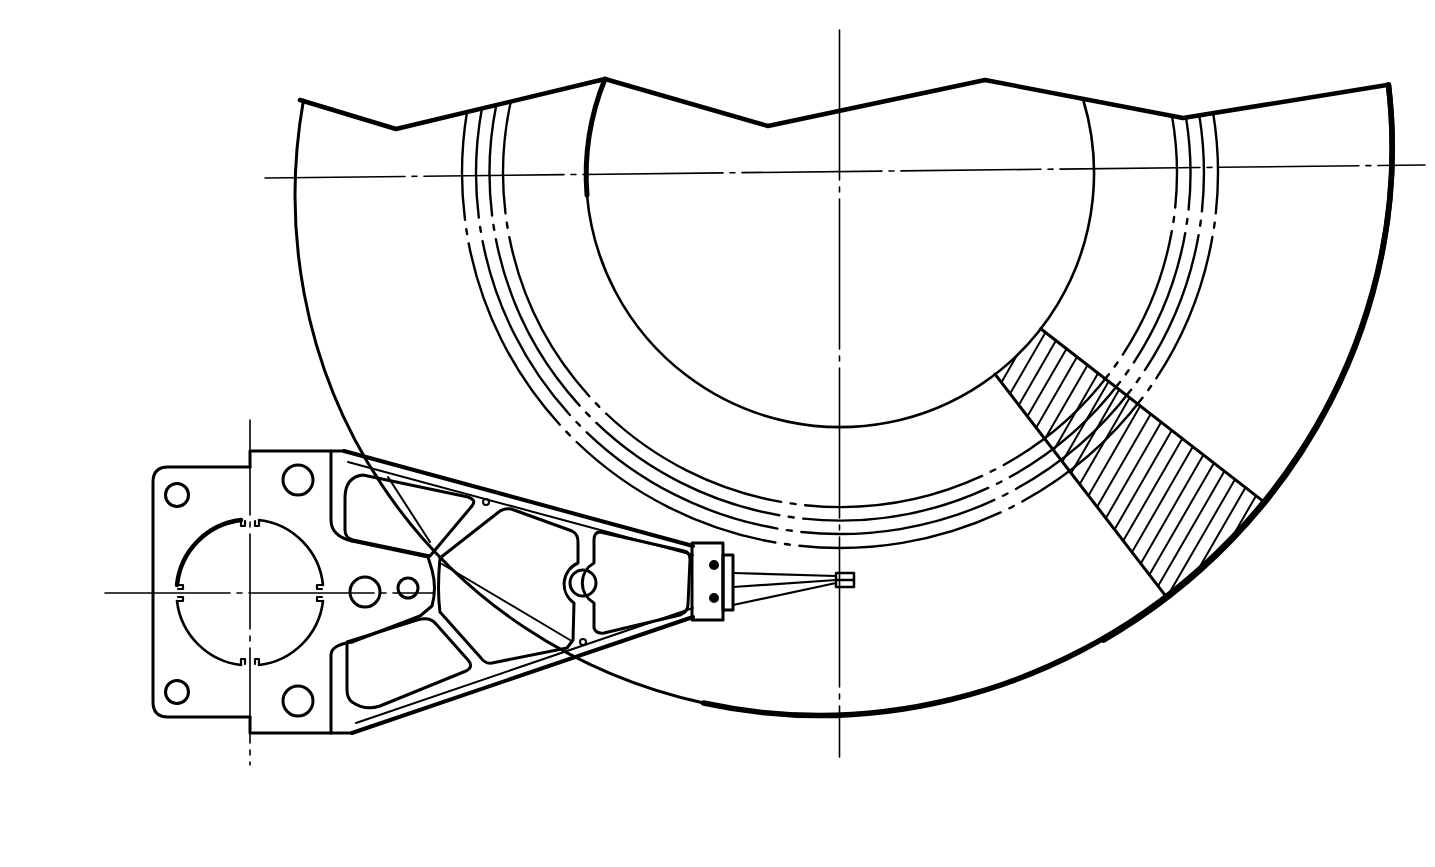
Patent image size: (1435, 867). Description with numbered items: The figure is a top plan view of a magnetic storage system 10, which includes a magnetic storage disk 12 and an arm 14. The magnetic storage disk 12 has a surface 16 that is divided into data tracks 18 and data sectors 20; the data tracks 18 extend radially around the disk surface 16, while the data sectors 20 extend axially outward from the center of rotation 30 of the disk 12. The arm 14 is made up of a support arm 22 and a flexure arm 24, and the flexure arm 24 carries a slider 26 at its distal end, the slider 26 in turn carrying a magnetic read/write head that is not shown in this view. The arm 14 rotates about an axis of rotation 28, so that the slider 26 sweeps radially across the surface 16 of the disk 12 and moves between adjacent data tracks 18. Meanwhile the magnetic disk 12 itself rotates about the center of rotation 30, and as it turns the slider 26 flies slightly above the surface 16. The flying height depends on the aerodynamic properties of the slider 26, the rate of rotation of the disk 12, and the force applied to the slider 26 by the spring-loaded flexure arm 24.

The magnetic storage system 10 is at (180, 230).
The magnetic storage disk 12 is at (292, 304).
The arm 14 is at (419, 582).
The surface 16 is at (1287, 402).
The data tracks 18 is at (930, 492).
The data sectors 20 is at (1246, 532).
The support arm 22 is at (453, 462).
The flexure arm 24 is at (768, 598).
The slider 26 is at (858, 584).
The axis of rotation 28 is at (250, 591).
The center of rotation 30 is at (845, 175).